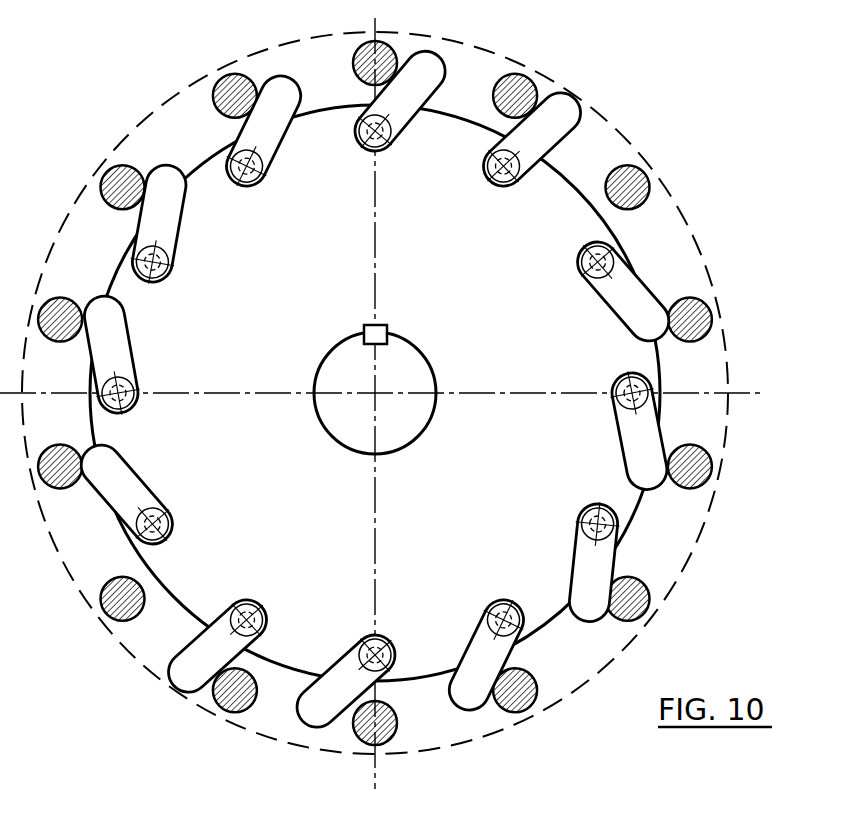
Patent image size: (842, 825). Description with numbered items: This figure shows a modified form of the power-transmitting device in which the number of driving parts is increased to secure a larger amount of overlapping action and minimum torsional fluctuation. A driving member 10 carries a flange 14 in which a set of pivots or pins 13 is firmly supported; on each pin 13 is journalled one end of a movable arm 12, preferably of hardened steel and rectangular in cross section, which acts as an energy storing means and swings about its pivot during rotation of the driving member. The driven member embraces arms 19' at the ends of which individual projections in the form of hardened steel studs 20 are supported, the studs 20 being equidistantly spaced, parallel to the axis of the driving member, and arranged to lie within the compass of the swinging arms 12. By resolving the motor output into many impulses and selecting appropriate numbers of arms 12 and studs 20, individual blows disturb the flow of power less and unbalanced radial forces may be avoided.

The driving member 10 is at (436, 381).
The movable arm 12 is at (558, 150).
The pivot or pin 13 is at (590, 263).
The flange 14 is at (662, 375).
The arm 19' is at (375, 393).
The stud 20 is at (652, 190).